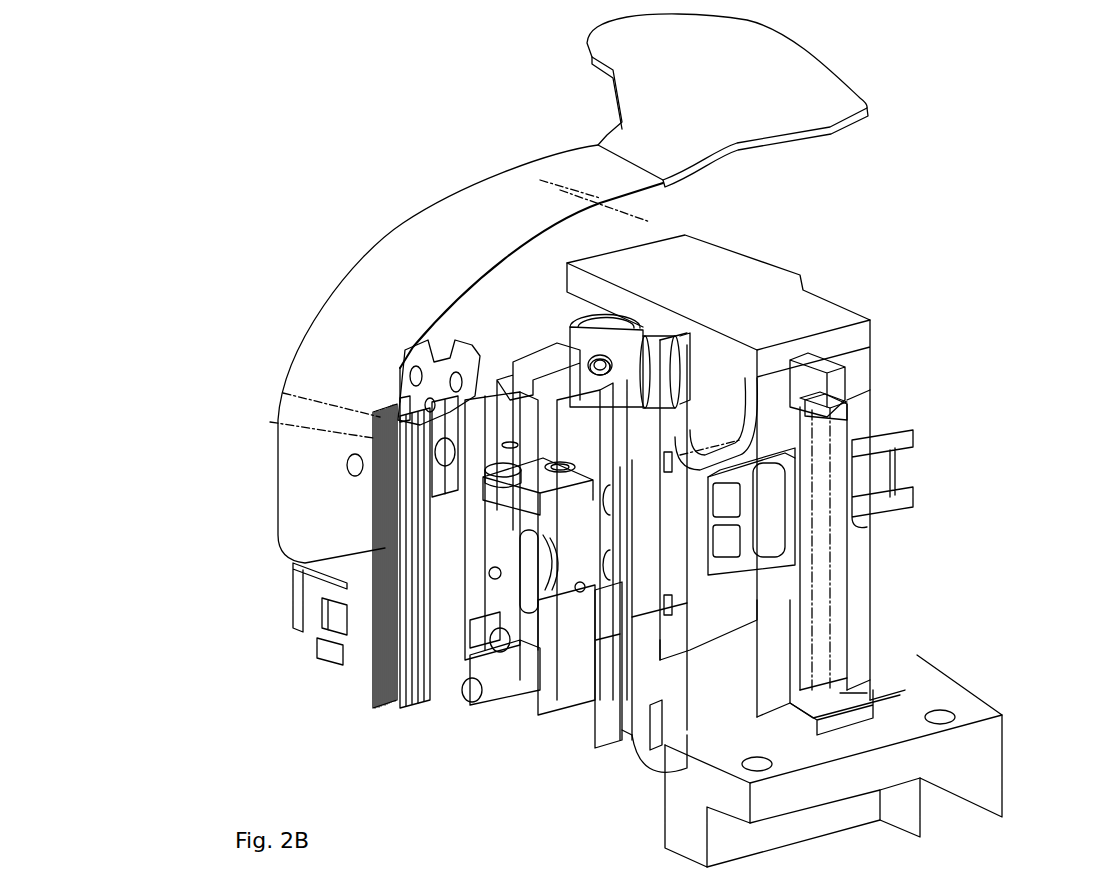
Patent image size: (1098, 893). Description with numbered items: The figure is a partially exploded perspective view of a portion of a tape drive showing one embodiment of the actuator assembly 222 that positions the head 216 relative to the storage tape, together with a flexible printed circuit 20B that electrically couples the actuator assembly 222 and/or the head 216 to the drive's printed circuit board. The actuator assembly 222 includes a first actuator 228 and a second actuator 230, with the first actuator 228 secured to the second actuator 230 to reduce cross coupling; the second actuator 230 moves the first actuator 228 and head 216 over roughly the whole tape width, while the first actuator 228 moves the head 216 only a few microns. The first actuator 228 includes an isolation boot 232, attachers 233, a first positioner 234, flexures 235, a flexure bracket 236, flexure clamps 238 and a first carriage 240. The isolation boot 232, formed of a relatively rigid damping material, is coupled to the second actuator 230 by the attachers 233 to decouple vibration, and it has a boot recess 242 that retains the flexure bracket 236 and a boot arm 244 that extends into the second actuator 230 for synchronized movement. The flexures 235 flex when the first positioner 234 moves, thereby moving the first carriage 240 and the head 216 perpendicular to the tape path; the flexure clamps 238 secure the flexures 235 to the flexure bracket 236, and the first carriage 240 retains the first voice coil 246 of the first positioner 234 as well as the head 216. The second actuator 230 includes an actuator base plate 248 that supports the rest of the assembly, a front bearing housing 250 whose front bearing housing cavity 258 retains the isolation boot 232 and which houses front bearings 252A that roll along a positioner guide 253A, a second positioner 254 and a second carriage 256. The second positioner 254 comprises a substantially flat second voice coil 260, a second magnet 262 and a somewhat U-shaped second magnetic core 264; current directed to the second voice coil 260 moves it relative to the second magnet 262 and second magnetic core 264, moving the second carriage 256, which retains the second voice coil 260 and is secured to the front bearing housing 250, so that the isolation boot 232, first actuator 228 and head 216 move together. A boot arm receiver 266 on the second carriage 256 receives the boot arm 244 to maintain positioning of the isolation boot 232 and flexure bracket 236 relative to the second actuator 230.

The flexible printed circuit 20B is at (392, 275).
The head 216 is at (366, 553).
The actuator assembly 222 is at (926, 590).
The first actuator 228 is at (583, 472).
The second actuator 230 is at (906, 475).
The isolation boot 232 is at (638, 642).
The attacher 233 is at (668, 462).
The first positioner 234 is at (541, 576).
The flexure 235 is at (538, 465).
The flexure bracket 236 is at (577, 632).
The flexure clamp 238 is at (562, 472).
The first carriage 240 is at (490, 558).
The boot recess 242 is at (612, 600).
The boot arm 244 is at (807, 402).
The first voice coil 246 is at (547, 552).
The actuator base plate 248 is at (938, 698).
The front bearing housing 250 is at (687, 427).
The front bearing 252A is at (658, 347).
The positioner guide 253A is at (687, 353).
The second positioner 254 is at (848, 398).
The second carriage 256 is at (842, 443).
The front bearing housing cavity 258 is at (668, 640).
The second voice coil 260 is at (842, 395).
The second magnet 262 is at (827, 640).
The second magnetic core 264 is at (777, 693).
The boot arm receiver 266 is at (727, 543).